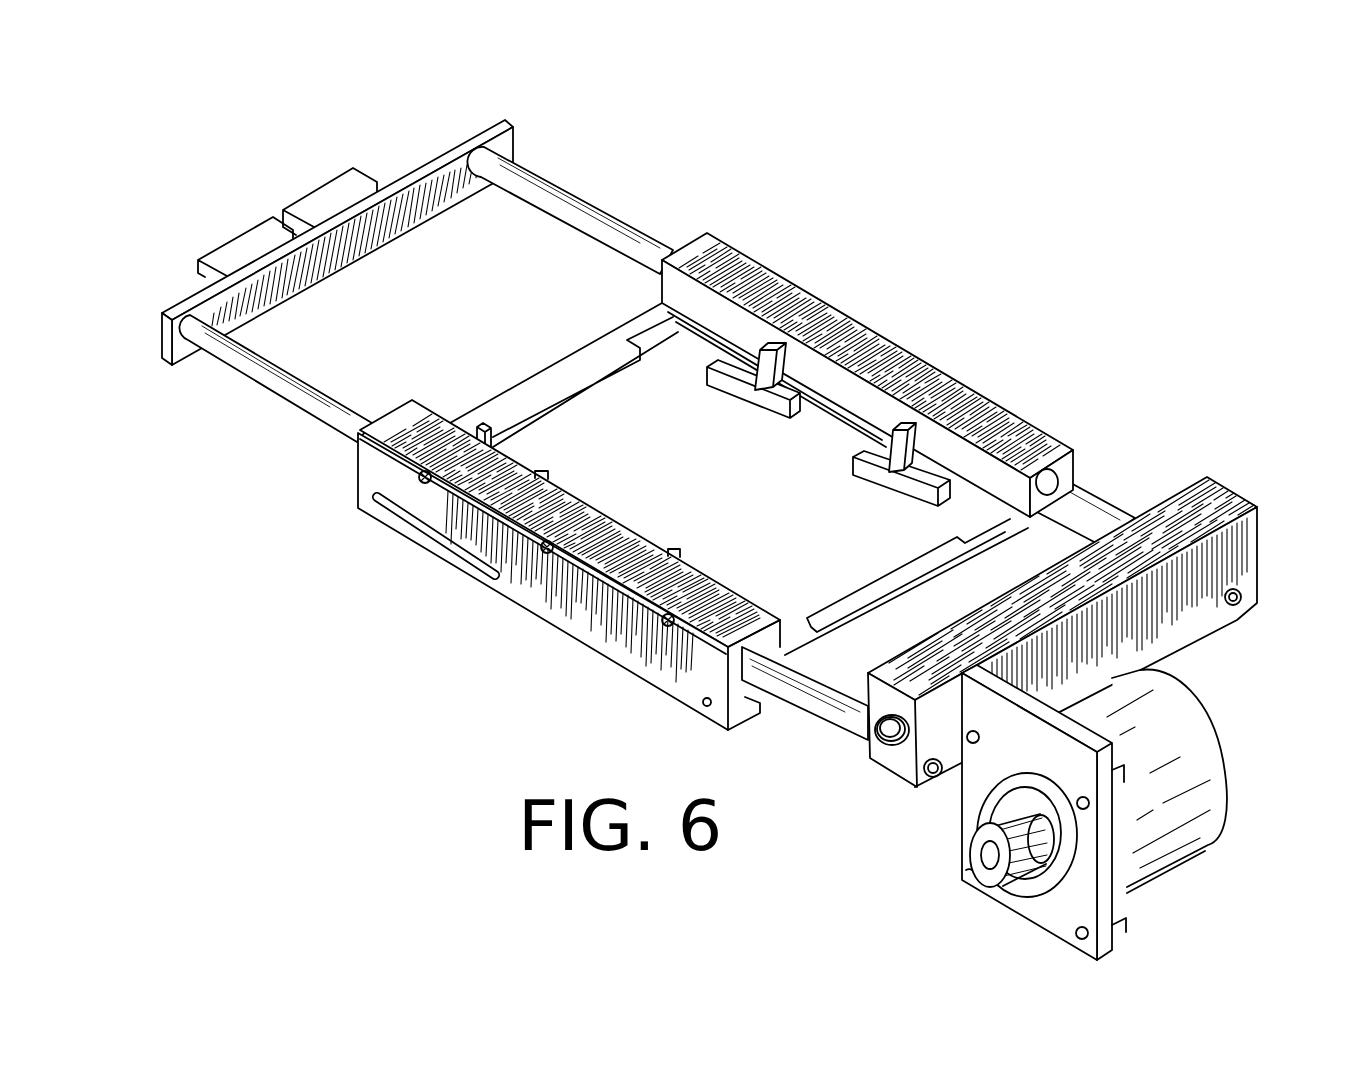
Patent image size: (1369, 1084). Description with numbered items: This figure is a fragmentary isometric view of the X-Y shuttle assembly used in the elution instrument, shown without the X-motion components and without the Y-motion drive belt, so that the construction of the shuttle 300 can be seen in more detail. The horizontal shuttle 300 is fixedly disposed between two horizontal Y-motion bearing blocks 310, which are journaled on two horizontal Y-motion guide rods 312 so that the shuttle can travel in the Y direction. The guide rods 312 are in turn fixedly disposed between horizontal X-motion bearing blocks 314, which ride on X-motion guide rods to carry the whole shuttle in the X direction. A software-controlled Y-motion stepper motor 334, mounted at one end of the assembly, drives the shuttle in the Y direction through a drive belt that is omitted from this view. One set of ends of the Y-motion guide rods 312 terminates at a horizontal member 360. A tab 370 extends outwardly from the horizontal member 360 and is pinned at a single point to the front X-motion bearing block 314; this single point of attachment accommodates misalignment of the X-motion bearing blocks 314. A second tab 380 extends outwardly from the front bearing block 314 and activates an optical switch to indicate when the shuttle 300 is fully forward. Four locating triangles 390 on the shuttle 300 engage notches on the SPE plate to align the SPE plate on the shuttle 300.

The shuttle 300 is at (922, 476).
The Y-motion bearing block 310 is at (825, 330).
The Y-motion guide rod 312 is at (570, 200).
The X-motion bearing block 314 is at (1213, 500).
The Y-motion stepper motor 334 is at (1173, 738).
The horizontal member 360 is at (423, 165).
The tab 370 is at (330, 195).
The second tab 380 is at (240, 245).
The locating triangle 390 is at (676, 553).